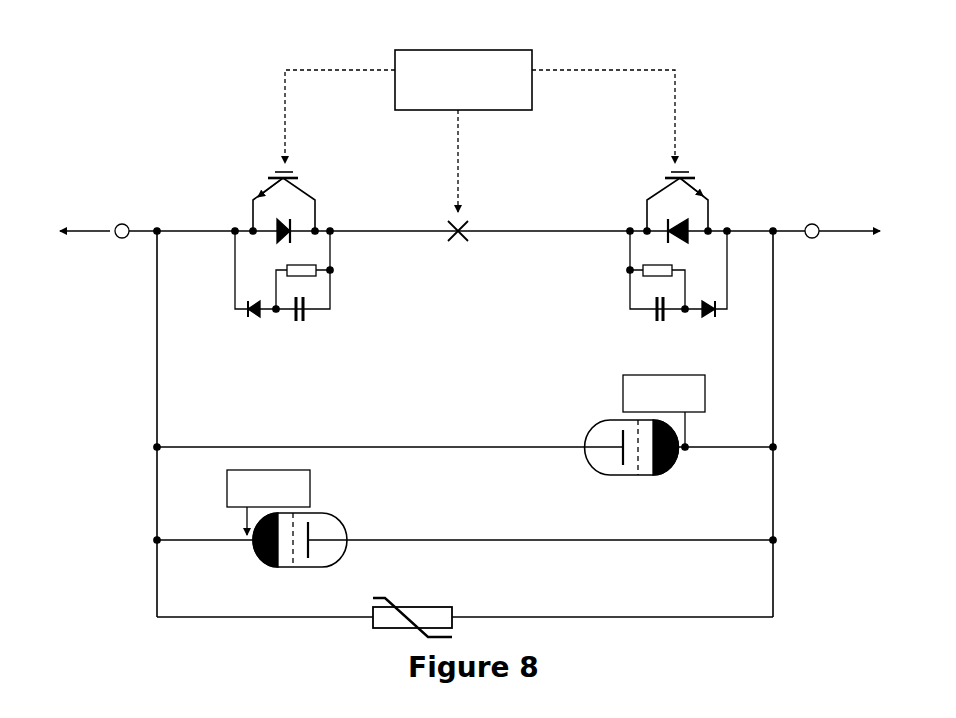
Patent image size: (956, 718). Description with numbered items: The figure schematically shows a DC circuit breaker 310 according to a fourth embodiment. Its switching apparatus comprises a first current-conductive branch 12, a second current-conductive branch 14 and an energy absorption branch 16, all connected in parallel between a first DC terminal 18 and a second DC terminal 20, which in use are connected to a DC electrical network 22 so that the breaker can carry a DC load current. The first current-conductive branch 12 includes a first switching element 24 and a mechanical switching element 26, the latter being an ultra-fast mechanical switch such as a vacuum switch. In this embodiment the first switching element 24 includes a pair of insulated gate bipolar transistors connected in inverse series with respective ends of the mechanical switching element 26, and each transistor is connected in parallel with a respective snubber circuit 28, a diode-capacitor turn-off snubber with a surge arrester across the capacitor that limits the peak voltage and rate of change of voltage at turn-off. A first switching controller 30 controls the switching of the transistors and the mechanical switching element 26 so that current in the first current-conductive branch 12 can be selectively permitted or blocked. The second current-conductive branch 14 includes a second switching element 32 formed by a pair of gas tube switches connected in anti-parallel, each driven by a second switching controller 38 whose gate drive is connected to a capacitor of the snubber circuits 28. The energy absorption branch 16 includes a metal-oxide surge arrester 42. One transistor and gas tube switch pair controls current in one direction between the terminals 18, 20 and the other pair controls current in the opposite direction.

The DC circuit breaker 310 is at (228, 102).
The first current-conductive branch 12 is at (752, 240).
The second current-conductive branch 14 is at (748, 456).
The energy absorption branch 16 is at (737, 611).
The first DC terminal 18 is at (155, 225).
The second DC terminal 20 is at (773, 231).
The DC electrical network 22 is at (472, 232).
The first switching element 24 is at (307, 190).
The mechanical switching element 26 is at (473, 222).
The snubber circuit 28 is at (643, 287).
The first switching controller 30 is at (483, 97).
The second switching element 32 is at (593, 457).
The second switching controller 38 is at (300, 488).
The metal-oxide surge arrester 42 is at (430, 614).